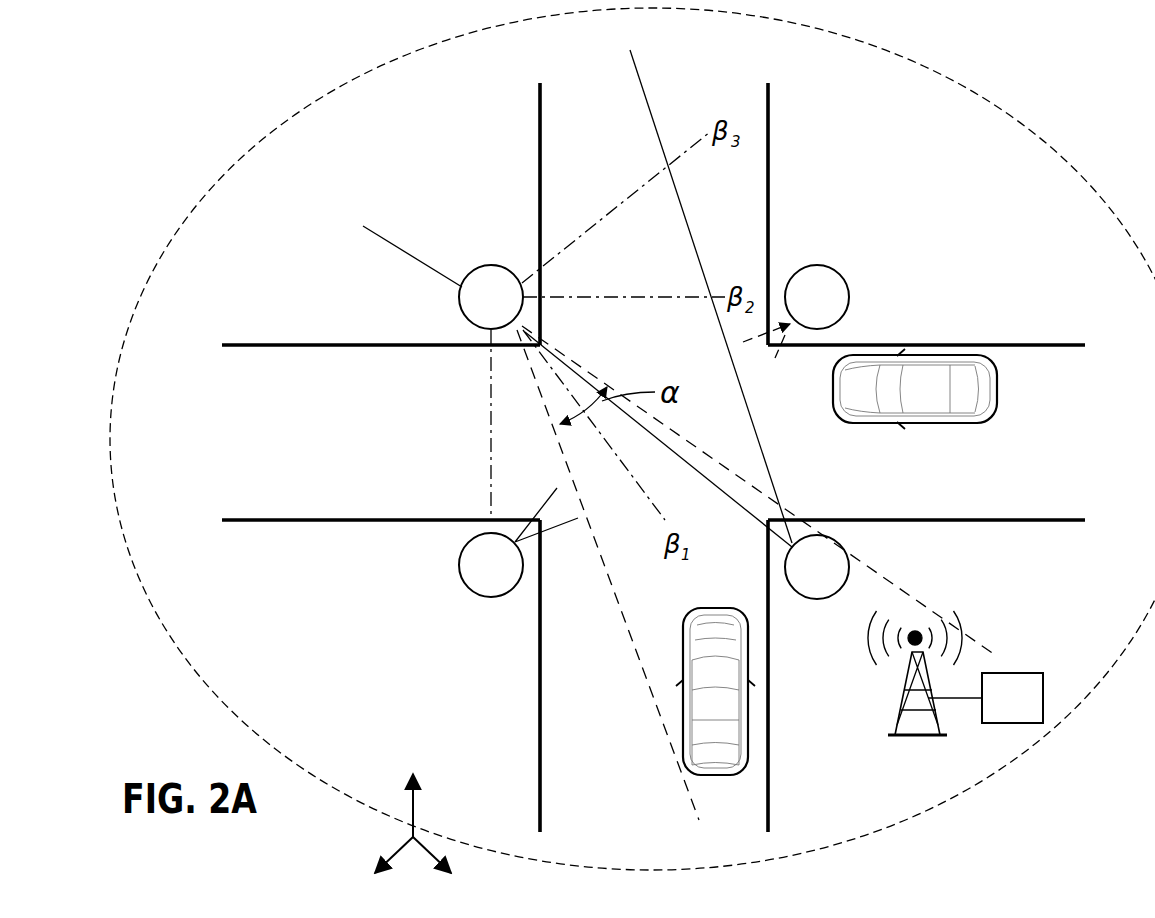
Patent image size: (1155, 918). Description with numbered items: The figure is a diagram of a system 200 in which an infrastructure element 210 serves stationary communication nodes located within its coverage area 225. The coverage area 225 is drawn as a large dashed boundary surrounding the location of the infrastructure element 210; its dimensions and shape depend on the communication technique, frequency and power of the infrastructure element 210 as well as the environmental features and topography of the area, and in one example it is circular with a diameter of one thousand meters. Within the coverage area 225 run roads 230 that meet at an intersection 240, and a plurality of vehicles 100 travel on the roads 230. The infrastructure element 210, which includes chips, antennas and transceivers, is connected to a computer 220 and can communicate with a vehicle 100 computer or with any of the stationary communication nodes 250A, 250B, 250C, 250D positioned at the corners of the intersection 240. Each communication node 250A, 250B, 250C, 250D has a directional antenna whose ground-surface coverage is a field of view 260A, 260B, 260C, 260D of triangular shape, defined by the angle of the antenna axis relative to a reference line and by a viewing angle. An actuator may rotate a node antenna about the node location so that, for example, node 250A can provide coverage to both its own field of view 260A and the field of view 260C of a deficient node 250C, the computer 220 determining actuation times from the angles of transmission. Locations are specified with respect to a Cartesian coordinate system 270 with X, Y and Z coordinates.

The vehicle 100 is at (940, 355).
The system 200 is at (288, 146).
The infrastructure element 210 is at (907, 710).
The computer 220 is at (1030, 710).
The coverage area 225 is at (1052, 145).
The road 230 is at (327, 343).
The intersection 240 is at (525, 478).
The stationary communication node 250A is at (466, 308).
The stationary communication node 250B is at (792, 308).
The stationary communication node 250C is at (792, 578).
The stationary communication node 250D is at (466, 576).
The field of view 260A is at (980, 643).
The field of view 260B is at (770, 365).
The field of view 260C is at (664, 150).
The field of view 260D is at (563, 527).
The Cartesian coordinate system 270 is at (447, 806).